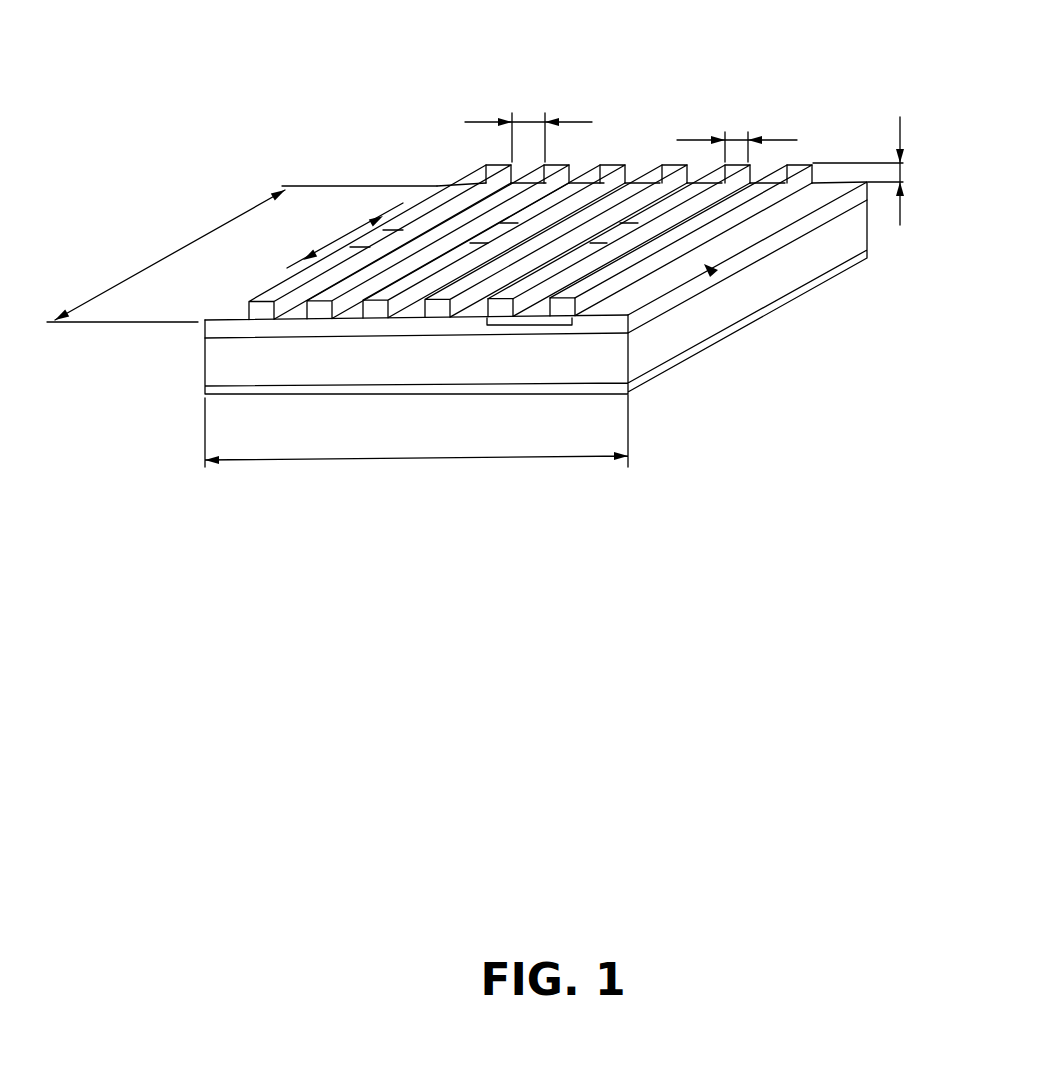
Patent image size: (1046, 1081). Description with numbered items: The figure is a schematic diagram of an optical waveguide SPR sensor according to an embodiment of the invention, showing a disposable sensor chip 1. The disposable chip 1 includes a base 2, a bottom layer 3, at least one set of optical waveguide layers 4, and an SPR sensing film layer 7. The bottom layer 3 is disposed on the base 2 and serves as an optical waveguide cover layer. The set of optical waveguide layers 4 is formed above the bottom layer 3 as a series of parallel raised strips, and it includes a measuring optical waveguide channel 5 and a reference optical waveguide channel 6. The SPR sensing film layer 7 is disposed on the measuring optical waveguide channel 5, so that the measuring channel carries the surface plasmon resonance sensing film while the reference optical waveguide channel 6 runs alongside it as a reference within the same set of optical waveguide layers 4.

The disposable sensor chip 1 is at (412, 140).
The base 2 is at (608, 358).
The bottom layer 3 is at (660, 288).
The set of optical waveguide layers 4 is at (530, 330).
The measuring optical waveguide channel 5 is at (720, 175).
The reference optical waveguide channel 6 is at (715, 208).
The SPR sensing film layer 7 is at (613, 233).